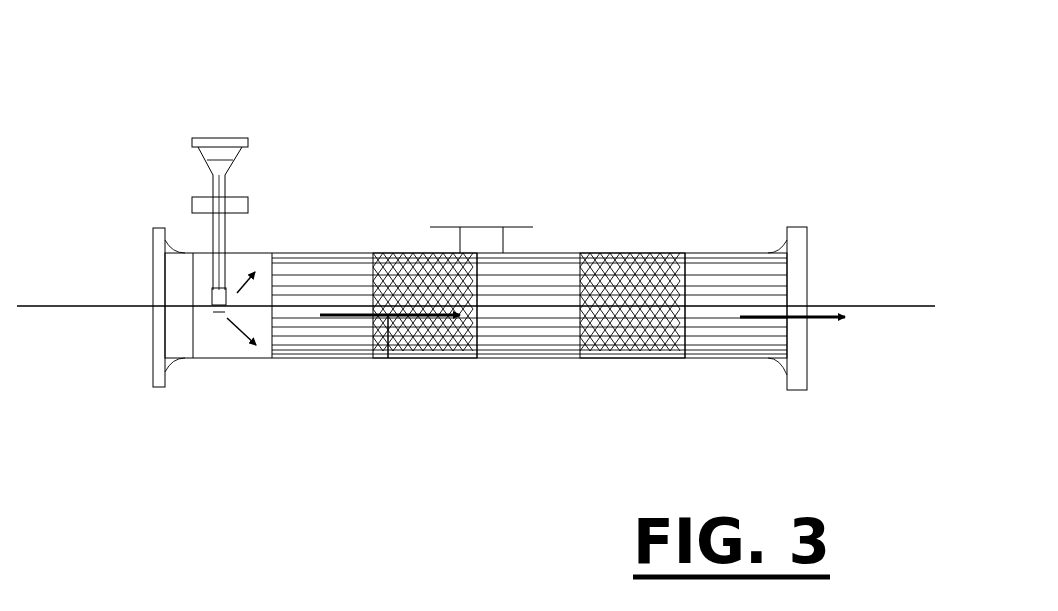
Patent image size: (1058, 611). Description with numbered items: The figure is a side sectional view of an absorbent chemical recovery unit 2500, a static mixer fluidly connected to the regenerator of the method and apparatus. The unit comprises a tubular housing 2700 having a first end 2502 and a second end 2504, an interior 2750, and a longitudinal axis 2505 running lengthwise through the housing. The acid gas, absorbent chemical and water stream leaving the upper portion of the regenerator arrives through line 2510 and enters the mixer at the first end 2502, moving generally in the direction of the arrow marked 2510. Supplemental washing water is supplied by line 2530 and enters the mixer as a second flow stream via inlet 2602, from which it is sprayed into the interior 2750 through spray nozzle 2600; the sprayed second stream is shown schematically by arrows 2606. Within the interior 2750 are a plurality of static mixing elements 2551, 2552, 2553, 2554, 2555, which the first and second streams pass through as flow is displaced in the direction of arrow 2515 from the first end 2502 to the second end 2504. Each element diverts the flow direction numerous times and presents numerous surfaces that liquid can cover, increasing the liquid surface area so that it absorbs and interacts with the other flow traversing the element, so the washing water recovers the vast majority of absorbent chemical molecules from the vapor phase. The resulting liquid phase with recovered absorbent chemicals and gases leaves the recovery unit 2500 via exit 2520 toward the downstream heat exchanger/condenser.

The absorbent chemical recovery unit 2500 is at (464, 256).
The first end 2502 is at (160, 243).
The second end 2504 is at (797, 240).
The longitudinal axis 2505 is at (63, 306).
The line 2510 is at (153, 323).
The arrow 2515 is at (388, 330).
The exit 2520 is at (806, 320).
The line 2530 is at (298, 156).
The static mixing element 2551 is at (318, 344).
The static mixing element 2552 is at (420, 343).
The static mixing element 2553 is at (530, 344).
The static mixing element 2554 is at (625, 295).
The static mixing element 2555 is at (716, 283).
The spray nozzle 2600 is at (212, 306).
The inlet 2602 is at (228, 177).
The arrows 2606 is at (243, 297).
The tubular housing 2700 is at (540, 253).
The interior 2750 is at (590, 322).